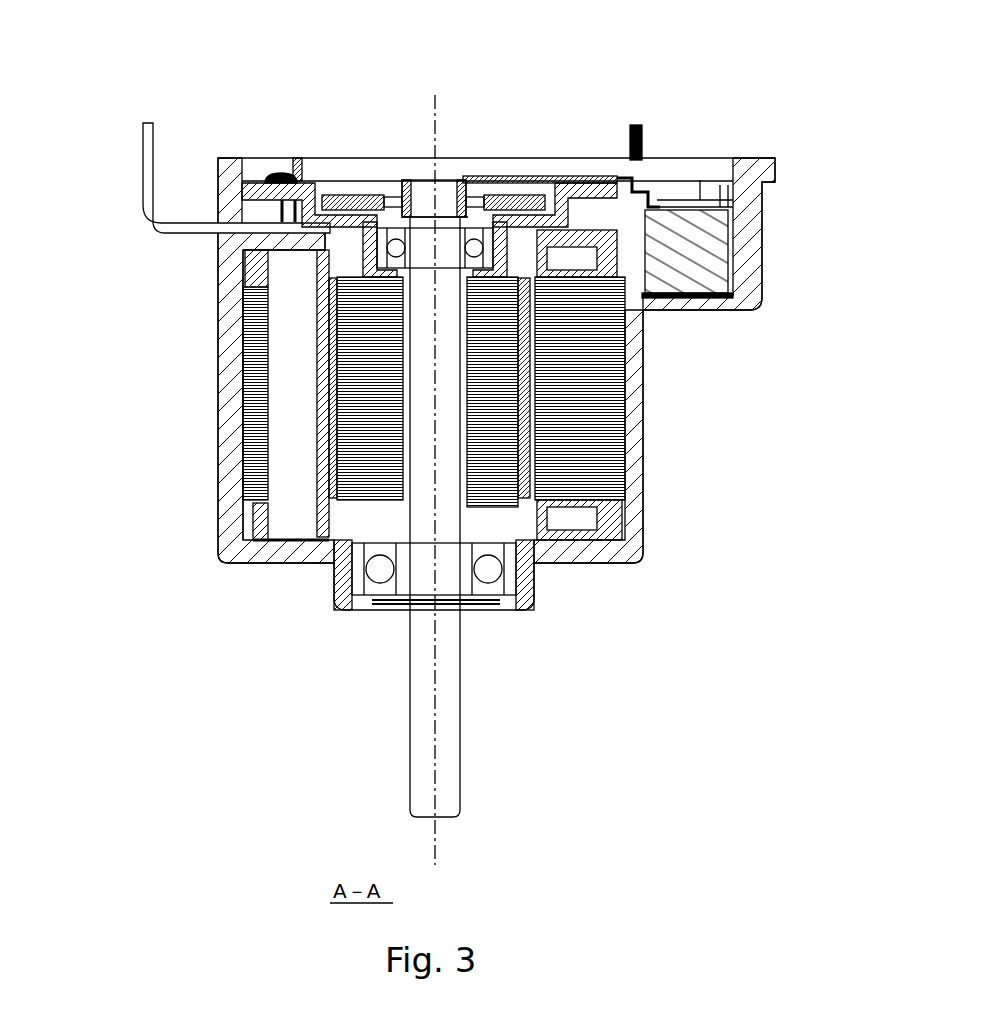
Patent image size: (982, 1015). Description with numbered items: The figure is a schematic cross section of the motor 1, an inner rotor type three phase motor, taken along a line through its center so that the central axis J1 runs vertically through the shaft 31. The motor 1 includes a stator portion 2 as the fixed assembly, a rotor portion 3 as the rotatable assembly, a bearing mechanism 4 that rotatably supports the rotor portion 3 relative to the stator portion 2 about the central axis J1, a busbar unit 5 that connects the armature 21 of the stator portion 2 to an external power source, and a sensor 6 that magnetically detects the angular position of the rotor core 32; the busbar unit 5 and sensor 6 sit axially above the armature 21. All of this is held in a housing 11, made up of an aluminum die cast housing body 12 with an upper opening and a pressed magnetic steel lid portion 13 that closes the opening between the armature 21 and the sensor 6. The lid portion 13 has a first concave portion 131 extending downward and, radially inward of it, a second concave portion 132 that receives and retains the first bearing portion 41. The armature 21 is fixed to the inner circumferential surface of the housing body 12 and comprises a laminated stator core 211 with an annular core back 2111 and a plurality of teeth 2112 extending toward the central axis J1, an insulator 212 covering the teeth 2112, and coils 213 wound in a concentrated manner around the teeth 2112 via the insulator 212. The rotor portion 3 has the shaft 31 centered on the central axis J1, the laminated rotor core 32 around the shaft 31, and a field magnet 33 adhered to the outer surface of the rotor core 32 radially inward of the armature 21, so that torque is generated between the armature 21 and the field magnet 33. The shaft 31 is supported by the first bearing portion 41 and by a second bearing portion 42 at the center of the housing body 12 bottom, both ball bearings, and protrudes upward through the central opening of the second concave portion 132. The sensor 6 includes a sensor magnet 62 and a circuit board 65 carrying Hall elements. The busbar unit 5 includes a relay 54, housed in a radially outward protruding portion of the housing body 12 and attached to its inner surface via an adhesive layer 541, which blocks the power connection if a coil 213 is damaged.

The motor 1 is at (217, 116).
The stator portion 2 is at (95, 420).
The rotor portion 3 is at (755, 408).
The bearing mechanism 4 is at (517, 52).
The busbar unit 5 is at (693, 237).
The sensor 6 is at (575, 97).
The housing 11 is at (165, 288).
The housing body 12 is at (233, 312).
The lid portion 13 is at (250, 268).
The armature 21 is at (128, 497).
The shaft 31 is at (455, 354).
The rotor core 32 is at (498, 375).
The field magnet 33 is at (527, 403).
The first bearing portion 41 is at (487, 233).
The second bearing portion 42 is at (362, 588).
The relay 54 is at (752, 210).
The sensor magnet 62 is at (518, 203).
The circuit board 65 is at (548, 196).
The first concave portion 131 is at (352, 190).
The second concave portion 132 is at (418, 240).
The stator core 211 is at (217, 395).
The insulator 212 is at (255, 523).
The coils 213 is at (297, 523).
The adhesive layer 541 is at (695, 298).
The core back 2111 is at (318, 372).
The teeth 2112 is at (318, 378).
The central axis J1 is at (440, 115).